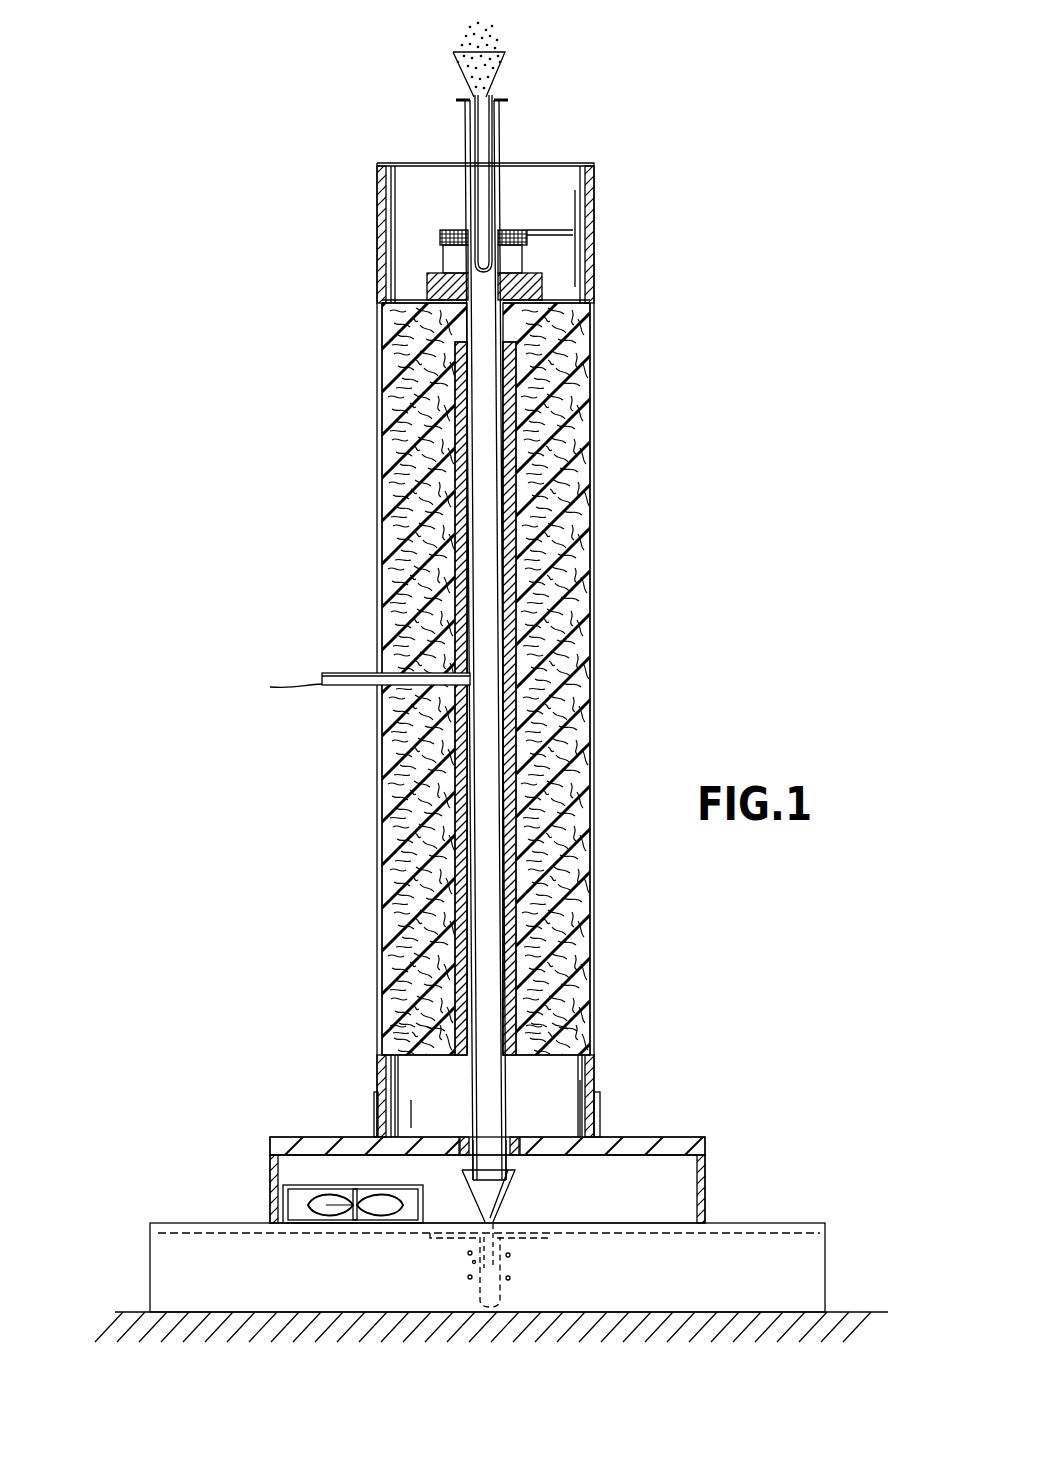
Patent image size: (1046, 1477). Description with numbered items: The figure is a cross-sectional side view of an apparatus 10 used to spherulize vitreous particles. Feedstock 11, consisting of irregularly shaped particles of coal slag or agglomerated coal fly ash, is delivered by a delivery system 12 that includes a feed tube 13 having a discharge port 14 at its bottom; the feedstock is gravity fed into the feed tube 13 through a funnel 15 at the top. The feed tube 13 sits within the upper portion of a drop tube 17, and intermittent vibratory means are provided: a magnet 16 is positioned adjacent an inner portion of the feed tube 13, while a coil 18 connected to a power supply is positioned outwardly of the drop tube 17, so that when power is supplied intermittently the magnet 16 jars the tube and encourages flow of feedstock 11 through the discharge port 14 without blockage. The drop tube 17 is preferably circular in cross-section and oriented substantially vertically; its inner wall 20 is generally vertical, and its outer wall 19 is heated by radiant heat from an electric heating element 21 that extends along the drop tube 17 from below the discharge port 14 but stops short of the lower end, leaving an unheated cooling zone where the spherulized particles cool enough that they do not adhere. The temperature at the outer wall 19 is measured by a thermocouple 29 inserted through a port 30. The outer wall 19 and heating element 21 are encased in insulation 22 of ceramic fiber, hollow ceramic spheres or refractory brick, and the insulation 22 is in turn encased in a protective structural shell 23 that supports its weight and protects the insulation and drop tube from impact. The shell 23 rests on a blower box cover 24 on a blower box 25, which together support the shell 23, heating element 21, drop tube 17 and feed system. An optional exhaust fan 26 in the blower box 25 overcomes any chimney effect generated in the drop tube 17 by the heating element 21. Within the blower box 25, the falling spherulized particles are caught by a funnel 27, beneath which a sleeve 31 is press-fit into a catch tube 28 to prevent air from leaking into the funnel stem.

The apparatus 10 is at (628, 88).
The feedstock 11 is at (493, 35).
The delivery system 12 is at (500, 130).
The feed tube 13 is at (470, 112).
The discharge port 14 is at (486, 270).
The funnel 15 is at (461, 70).
The magnet 16 is at (499, 229).
The drop tube 17 is at (488, 315).
The coil 18 is at (450, 230).
The outer wall 19 is at (507, 1080).
The inner wall 20 is at (497, 1114).
The electric heating element 21 is at (460, 576).
The insulation 22 is at (586, 611).
The protective structural shell 23 is at (593, 177).
The blower box cover 24 is at (313, 1136).
The blower box 25 is at (270, 1172).
The exhaust fan 26 is at (320, 1205).
The funnel 27 is at (503, 1193).
The catch tube 28 is at (500, 1297).
The thermocouple 29 is at (348, 688).
The port 30 is at (373, 683).
The sleeve 31 is at (467, 1263).